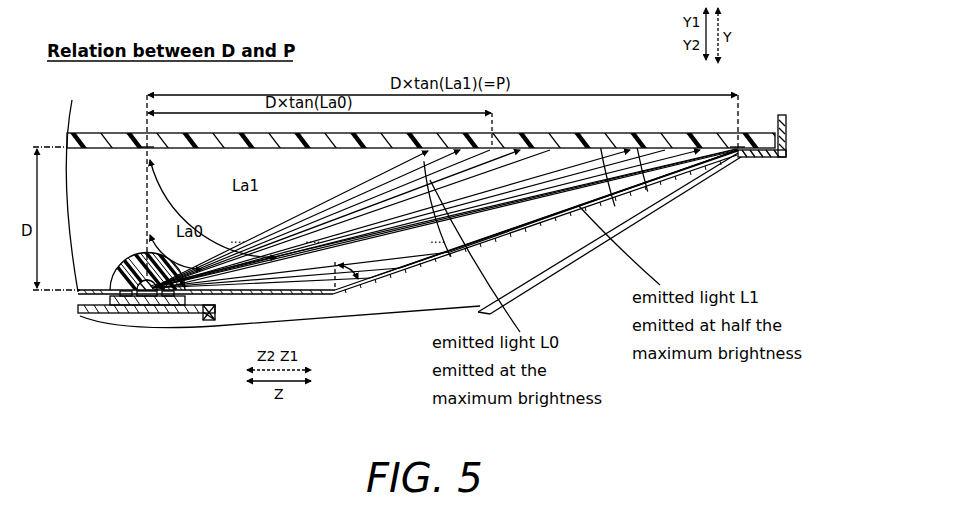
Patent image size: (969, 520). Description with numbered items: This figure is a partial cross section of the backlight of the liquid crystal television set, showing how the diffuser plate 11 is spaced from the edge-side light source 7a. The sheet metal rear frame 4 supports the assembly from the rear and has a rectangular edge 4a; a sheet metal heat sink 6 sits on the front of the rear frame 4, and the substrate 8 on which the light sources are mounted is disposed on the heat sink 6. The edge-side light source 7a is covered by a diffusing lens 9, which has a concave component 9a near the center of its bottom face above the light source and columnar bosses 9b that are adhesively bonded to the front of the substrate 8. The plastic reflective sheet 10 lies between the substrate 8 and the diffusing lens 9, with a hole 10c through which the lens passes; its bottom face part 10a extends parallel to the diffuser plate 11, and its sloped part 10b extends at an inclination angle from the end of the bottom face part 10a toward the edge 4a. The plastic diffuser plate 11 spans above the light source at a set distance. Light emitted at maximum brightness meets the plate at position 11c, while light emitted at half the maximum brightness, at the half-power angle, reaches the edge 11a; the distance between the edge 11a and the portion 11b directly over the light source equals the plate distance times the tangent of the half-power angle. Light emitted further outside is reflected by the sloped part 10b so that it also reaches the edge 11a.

The rear frame 4 is at (662, 218).
The rectangular edge 4a is at (748, 158).
The sheet metal heat sink 6 is at (209, 320).
The edge-side light source 7a is at (141, 304).
The substrate 8 is at (150, 297).
The diffusing lens 9 is at (118, 268).
The concave component 9a is at (136, 284).
The columnar boss 9b is at (126, 297).
The reflective sheet 10 is at (408, 267).
The bottom face part 10a is at (330, 295).
The sloped part 10b is at (365, 283).
The hole 10c is at (80, 307).
The diffuser plate 11 is at (85, 133).
The edge of the diffuser plate 11a is at (737, 143).
The portion of the diffuser plate corresponding to the edge-side light source 11b is at (147, 149).
The position of the diffuser plate at which light L0 intersects 11c is at (492, 140).